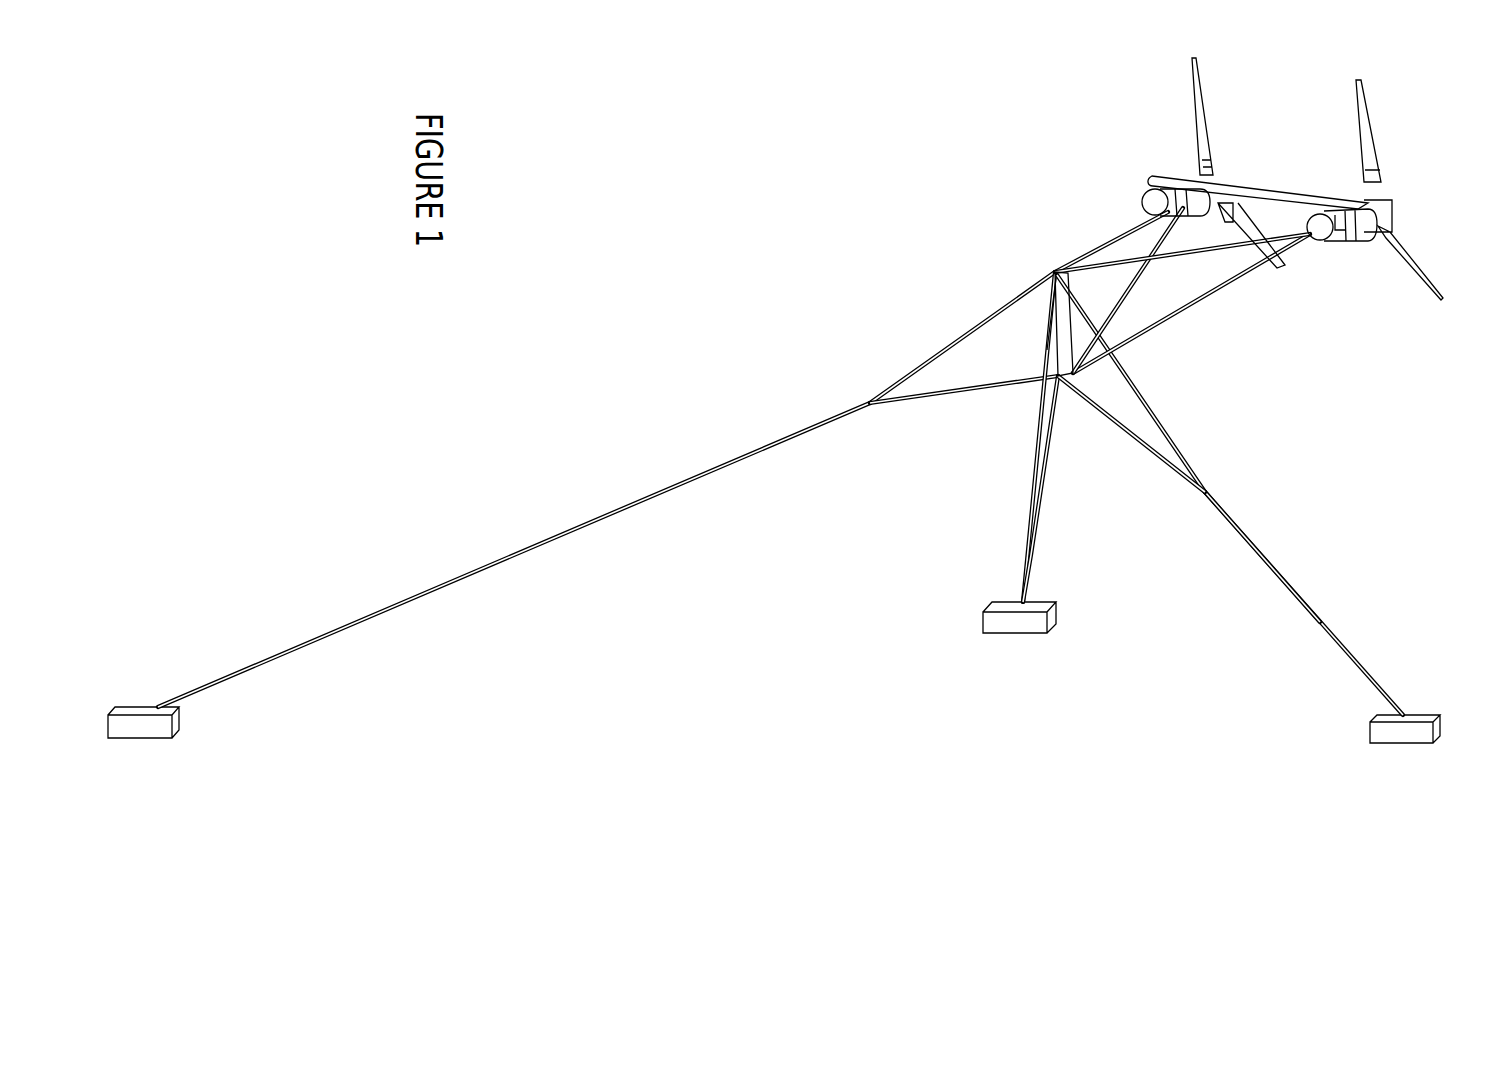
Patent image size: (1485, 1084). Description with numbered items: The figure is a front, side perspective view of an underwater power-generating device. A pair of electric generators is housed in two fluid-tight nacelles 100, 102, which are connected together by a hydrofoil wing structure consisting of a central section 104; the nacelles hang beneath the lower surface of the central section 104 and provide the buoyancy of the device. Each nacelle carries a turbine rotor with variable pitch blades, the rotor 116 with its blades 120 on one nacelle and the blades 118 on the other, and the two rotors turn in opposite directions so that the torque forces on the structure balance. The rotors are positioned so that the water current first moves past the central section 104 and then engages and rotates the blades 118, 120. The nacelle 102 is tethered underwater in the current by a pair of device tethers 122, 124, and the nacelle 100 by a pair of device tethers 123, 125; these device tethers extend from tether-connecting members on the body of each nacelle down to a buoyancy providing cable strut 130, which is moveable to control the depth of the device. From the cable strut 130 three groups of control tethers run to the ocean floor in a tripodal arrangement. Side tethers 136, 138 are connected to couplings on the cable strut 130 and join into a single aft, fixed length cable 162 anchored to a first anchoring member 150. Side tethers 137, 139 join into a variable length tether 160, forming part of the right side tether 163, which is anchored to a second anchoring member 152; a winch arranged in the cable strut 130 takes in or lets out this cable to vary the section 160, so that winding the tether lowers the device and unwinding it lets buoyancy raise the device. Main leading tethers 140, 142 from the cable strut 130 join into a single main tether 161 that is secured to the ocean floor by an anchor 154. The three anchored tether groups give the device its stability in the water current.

The nacelle 100 is at (1150, 205).
The nacelle 102 is at (1318, 236).
The central section 104 is at (1257, 187).
The rotor 116 is at (1385, 210).
The variable pitch blades 118 is at (1200, 105).
The variable pitch blades 120 is at (1362, 115).
The device tether 122 is at (1155, 323).
The device tether 123 is at (1143, 245).
The device tether 124 is at (1228, 247).
The device tether 125 is at (1090, 253).
The cable strut 130 is at (1062, 315).
The side tether 136 is at (1058, 400).
The side tether 137 is at (1148, 408).
The side tether 138 is at (1042, 348).
The side tether 139 is at (1100, 413).
The main leading tether 140 is at (912, 400).
The main leading tether 142 is at (953, 340).
The first anchoring member 150 is at (995, 626).
The second anchoring member 152 is at (1387, 735).
The anchor 154 is at (125, 717).
The variable length tether 160 is at (1262, 553).
The main tether 161 is at (738, 460).
The aft fixed length cable 162 is at (1032, 518).
The right side tether 163 is at (1375, 695).